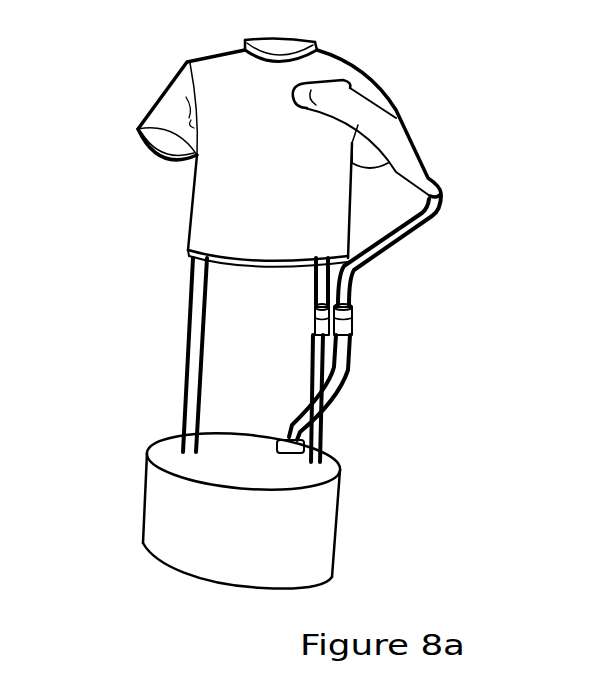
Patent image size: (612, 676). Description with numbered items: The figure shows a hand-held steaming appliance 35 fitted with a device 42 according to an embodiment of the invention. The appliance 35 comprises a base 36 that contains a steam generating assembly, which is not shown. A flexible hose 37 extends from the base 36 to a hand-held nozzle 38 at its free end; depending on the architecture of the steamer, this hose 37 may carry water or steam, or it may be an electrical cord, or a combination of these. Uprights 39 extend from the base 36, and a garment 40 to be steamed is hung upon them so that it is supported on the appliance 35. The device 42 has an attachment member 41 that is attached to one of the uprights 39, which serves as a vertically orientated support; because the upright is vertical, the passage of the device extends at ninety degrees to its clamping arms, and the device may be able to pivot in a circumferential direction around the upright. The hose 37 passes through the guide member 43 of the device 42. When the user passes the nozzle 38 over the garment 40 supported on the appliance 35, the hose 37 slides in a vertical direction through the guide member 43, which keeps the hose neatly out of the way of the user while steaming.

The hand-held steaming appliance 35 is at (111, 394).
The base 36 is at (168, 516).
The flexible hose 37 is at (350, 373).
The hand-held nozzle 38 is at (360, 122).
The uprights 39 is at (197, 303).
The garment 40 is at (228, 92).
The attachment member 41 is at (315, 318).
The device 42 is at (375, 315).
The guide member 43 is at (352, 325).